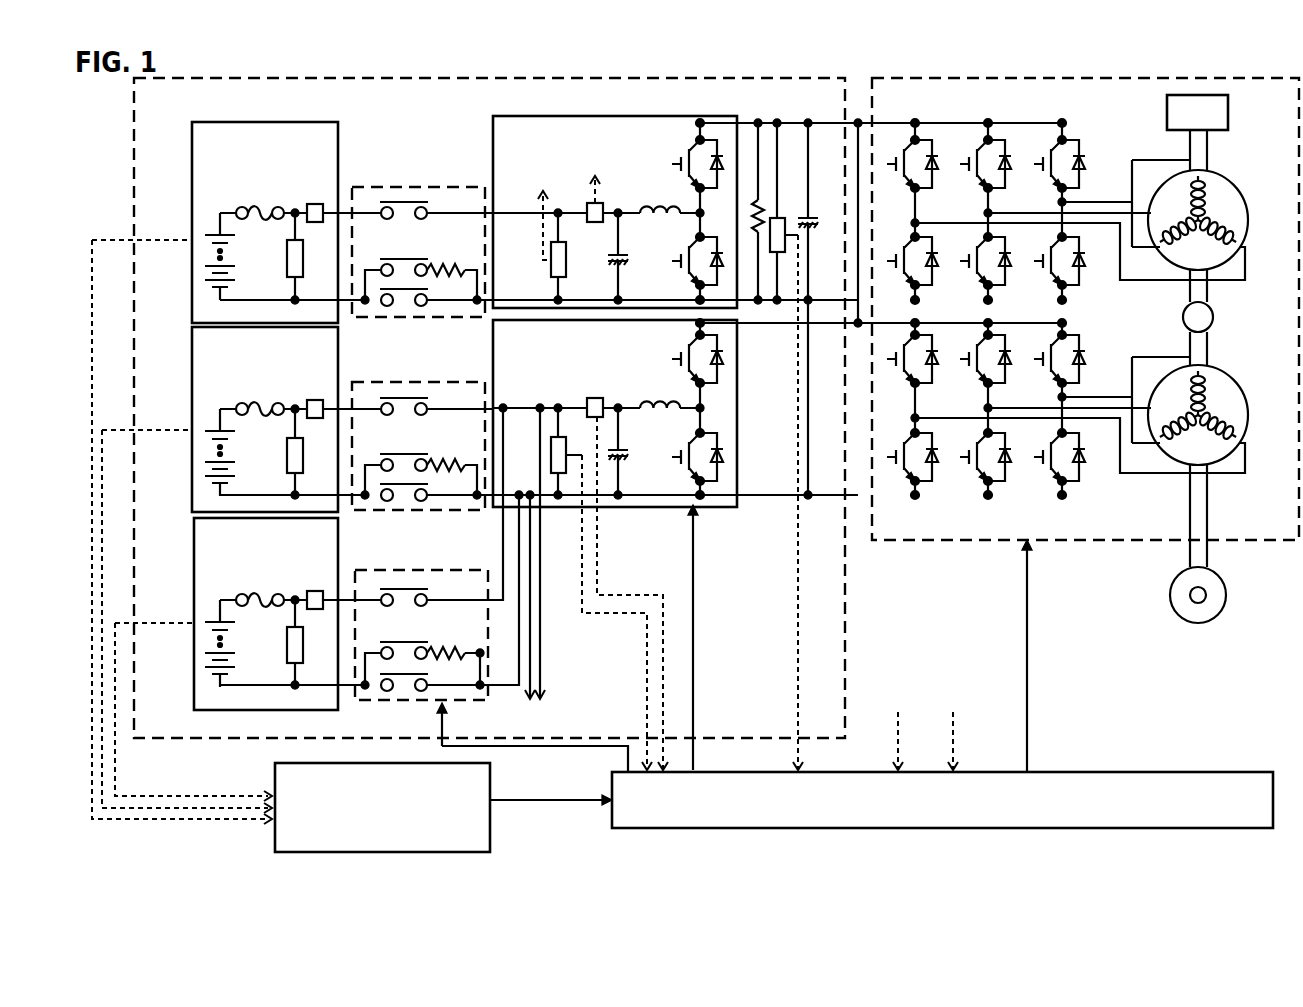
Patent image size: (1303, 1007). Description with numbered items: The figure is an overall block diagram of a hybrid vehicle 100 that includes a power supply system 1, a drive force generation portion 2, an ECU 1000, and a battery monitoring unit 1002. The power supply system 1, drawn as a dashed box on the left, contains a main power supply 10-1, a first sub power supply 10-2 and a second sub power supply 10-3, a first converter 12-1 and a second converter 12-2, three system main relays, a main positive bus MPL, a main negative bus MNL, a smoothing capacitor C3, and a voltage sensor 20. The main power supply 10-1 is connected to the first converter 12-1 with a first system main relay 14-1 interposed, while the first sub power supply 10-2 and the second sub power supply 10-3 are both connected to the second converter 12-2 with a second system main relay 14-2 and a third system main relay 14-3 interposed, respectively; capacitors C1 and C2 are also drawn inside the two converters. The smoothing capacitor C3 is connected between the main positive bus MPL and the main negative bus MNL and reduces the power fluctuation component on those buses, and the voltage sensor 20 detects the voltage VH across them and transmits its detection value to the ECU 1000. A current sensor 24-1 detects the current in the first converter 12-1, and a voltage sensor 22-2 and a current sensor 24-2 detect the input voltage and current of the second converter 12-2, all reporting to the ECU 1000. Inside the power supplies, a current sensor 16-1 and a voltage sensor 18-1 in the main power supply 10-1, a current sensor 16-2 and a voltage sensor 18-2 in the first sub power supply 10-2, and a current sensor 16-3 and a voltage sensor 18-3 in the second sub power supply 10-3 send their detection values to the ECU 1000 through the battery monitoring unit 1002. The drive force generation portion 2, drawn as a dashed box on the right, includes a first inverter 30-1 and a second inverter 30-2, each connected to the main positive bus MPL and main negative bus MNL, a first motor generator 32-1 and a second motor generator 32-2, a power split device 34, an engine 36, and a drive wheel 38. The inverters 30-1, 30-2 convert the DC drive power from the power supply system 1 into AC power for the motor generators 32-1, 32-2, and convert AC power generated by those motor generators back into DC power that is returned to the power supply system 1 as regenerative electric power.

The vehicle 100 is at (1290, 65).
The power supply system 1 is at (350, 78).
The drive force generation portion 2 is at (1060, 78).
The main power supply 10-1 is at (286, 205).
The sub power supply (1) 10-2 is at (261, 419).
The sub power supply (2) 10-3 is at (261, 613).
The converter (1) 12-1 is at (777, 196).
The converter (2) 12-2 is at (777, 544).
The SMR (1) 14-1 is at (405, 187).
The SMR (2) 14-2 is at (405, 382).
The SMR (3) 14-3 is at (405, 570).
The current sensor 16-1 is at (305, 207).
The current sensor 16-2 is at (305, 403).
The current sensor 16-3 is at (305, 594).
The voltage sensor 18-1 is at (287, 258).
The voltage sensor 18-2 is at (287, 455).
The voltage sensor 18-3 is at (287, 645).
The voltage sensor 20 is at (779, 218).
The voltage sensor 22-2 is at (563, 473).
The current sensor 24-1 is at (603, 222).
The current sensor 24-2 is at (550, 262).
The inverter (1) 30-1 is at (1076, 118).
The inverter (2) 30-2 is at (1080, 500).
The MG (1) 32-1 is at (1228, 180).
The MG (2) 32-2 is at (1228, 375).
The power split device 34 is at (1183, 313).
The engine 36 is at (1228, 112).
The drive wheel 38 is at (1222, 614).
The ECU 1000 is at (1110, 772).
The battery monitoring unit 1002 is at (490, 778).
The capacitor C1 is at (625, 265).
The capacitor C2 is at (625, 460).
The smoothing capacitor C3 is at (812, 213).
The main positive bus MPL is at (752, 122).
The main negative bus MNL is at (743, 300).